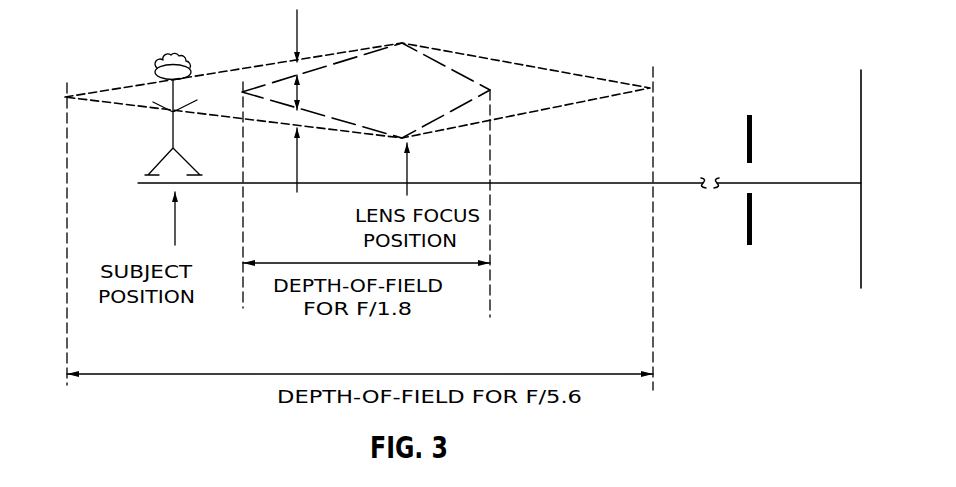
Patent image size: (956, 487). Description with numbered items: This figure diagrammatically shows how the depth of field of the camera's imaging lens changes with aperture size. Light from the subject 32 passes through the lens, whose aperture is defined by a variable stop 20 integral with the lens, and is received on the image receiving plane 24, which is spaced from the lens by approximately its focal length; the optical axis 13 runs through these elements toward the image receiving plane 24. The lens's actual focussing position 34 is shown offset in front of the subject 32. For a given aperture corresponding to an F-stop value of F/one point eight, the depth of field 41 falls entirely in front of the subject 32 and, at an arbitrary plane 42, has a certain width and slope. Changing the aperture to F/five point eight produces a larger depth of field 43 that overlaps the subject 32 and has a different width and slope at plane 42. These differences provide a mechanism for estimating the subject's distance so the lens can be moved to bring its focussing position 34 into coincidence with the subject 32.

The optical axis 13 is at (687, 183).
The variable stop 20 is at (746, 128).
The image receiving plane 24 is at (859, 85).
The subject 32 is at (176, 224).
The focussing position 34 is at (410, 176).
The depth of field 41 is at (480, 79).
The arbitrary plane 42 is at (297, 33).
The depth of field 43 is at (558, 70).